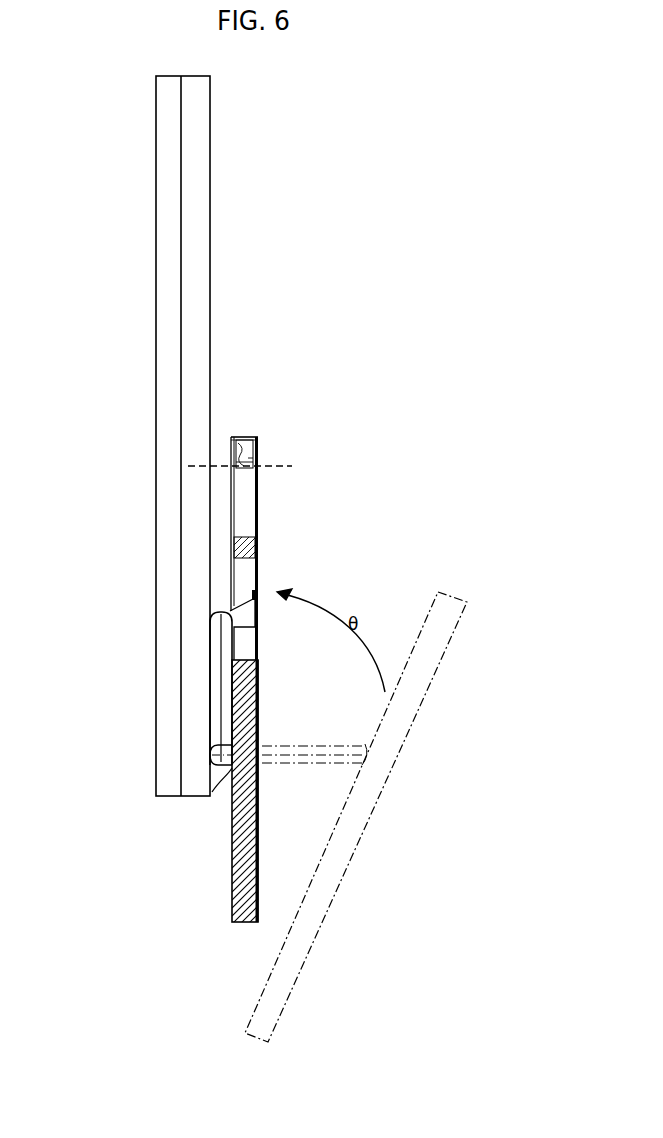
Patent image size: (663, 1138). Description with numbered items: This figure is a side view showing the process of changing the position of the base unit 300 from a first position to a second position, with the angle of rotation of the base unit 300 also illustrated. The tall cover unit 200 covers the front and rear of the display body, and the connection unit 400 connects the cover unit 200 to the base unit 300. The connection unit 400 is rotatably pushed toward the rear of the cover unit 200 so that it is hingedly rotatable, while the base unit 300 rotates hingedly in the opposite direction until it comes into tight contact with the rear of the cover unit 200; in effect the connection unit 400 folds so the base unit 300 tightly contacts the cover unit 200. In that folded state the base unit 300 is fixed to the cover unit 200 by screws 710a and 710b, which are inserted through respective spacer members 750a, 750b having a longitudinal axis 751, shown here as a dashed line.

The cover unit 200 is at (146, 187).
The connection unit 400 is at (205, 680).
The base unit 300 is at (226, 855).
The spacer member 750a is at (216, 455).
The spacer member 750b is at (296, 498).
The screw 710a is at (243, 462).
The screw 710b is at (270, 479).
The longitudinal axis 751 is at (285, 462).